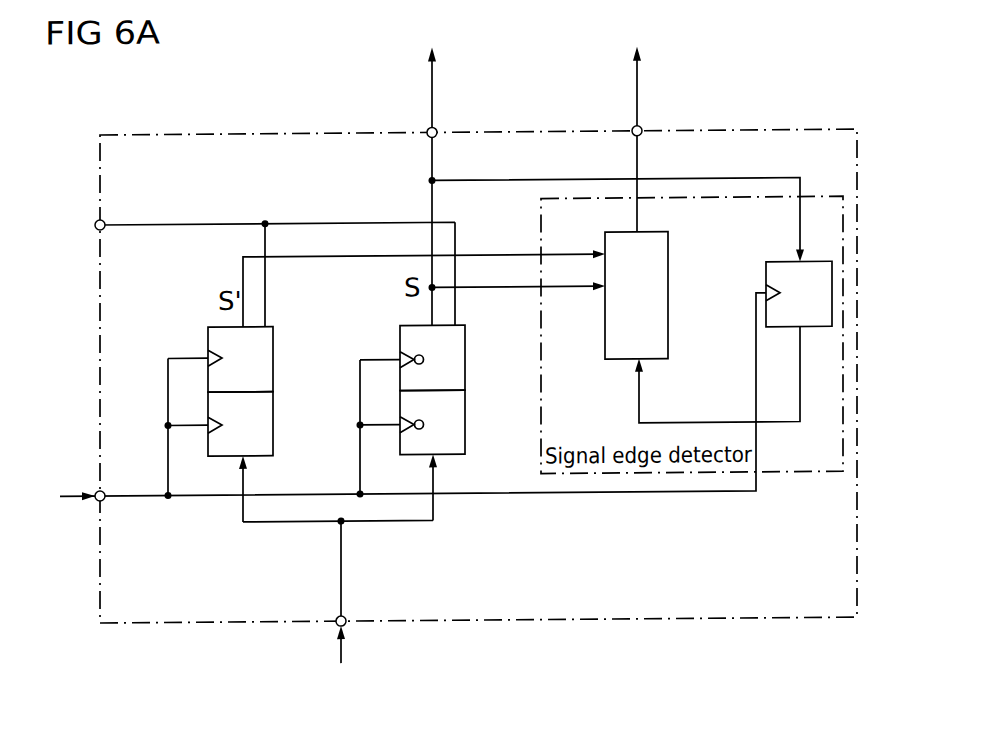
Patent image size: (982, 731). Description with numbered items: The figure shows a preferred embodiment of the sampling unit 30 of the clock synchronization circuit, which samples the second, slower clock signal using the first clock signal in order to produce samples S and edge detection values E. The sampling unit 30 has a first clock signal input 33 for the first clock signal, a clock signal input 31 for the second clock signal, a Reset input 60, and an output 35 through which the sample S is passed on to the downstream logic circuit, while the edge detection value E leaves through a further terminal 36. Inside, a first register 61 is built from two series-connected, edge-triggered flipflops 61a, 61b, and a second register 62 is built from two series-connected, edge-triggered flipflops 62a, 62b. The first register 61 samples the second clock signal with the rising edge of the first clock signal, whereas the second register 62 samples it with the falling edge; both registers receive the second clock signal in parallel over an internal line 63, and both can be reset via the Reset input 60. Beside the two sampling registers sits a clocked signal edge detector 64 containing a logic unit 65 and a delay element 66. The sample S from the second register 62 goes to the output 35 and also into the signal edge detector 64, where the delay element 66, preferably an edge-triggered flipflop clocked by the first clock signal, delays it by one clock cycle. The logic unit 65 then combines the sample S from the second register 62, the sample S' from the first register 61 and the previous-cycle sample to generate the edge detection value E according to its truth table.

The sampling unit 30 is at (478, 376).
The clock signal input 31 is at (345, 629).
The first clock signal input 33 is at (98, 501).
The output 35 is at (436, 131).
The output E 36 is at (634, 131).
The Reset input 60 is at (97, 229).
The first register 61 is at (232, 412).
The edge-triggered flipflop 61a is at (273, 425).
The edge-triggered flipflop 61b is at (273, 360).
The second register 62 is at (425, 411).
The edge-triggered flipflop 62a is at (465, 428).
The edge-triggered flipflop 62b is at (465, 360).
The internal line 63 is at (342, 562).
The signal edge detector 64 is at (801, 264).
The logic unit 65 is at (670, 275).
The delay element 66 is at (775, 335).